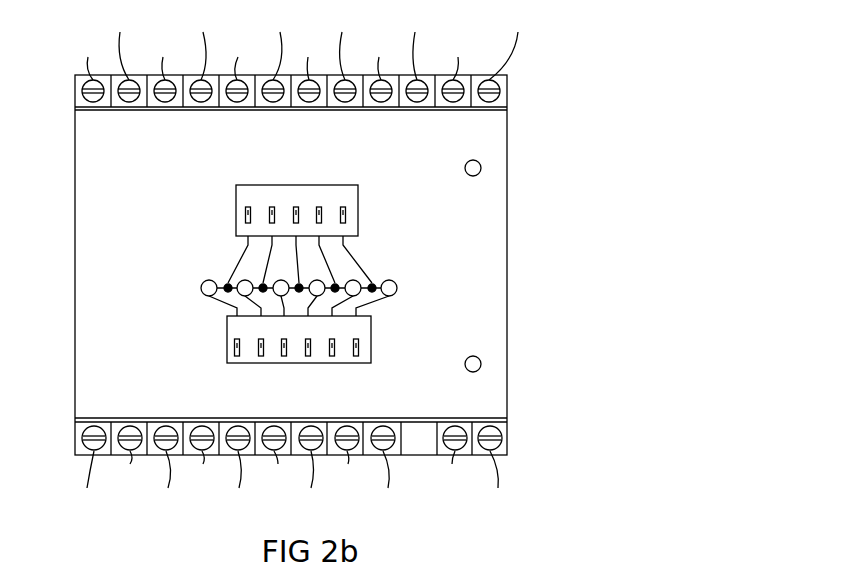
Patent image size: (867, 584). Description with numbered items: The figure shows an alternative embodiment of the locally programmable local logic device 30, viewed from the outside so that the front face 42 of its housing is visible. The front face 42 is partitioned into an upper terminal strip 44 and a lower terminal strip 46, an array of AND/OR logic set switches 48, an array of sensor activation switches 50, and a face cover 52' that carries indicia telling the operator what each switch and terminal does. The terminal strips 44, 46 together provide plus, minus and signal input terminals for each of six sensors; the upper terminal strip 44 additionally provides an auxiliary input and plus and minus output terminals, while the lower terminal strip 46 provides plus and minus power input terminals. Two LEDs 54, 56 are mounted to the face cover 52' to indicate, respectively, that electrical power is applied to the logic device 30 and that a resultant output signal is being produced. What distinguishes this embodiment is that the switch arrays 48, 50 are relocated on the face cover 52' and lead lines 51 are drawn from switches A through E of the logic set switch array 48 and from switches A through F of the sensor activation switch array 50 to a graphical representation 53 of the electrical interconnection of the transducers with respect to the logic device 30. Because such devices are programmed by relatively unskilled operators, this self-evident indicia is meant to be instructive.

The local logic device 30 is at (518, 248).
The front face 42 is at (88, 238).
The terminal strip 44 is at (80, 85).
The terminal strip 46 is at (80, 443).
The array of AND/OR logic set switches 48 is at (238, 187).
The array of sensor activation switches 50 is at (365, 343).
The lead lines 51 is at (237, 253).
The face cover 52' is at (260, 265).
The graphical representation 53 is at (403, 278).
The LED 54 is at (481, 364).
The LED 56 is at (481, 168).